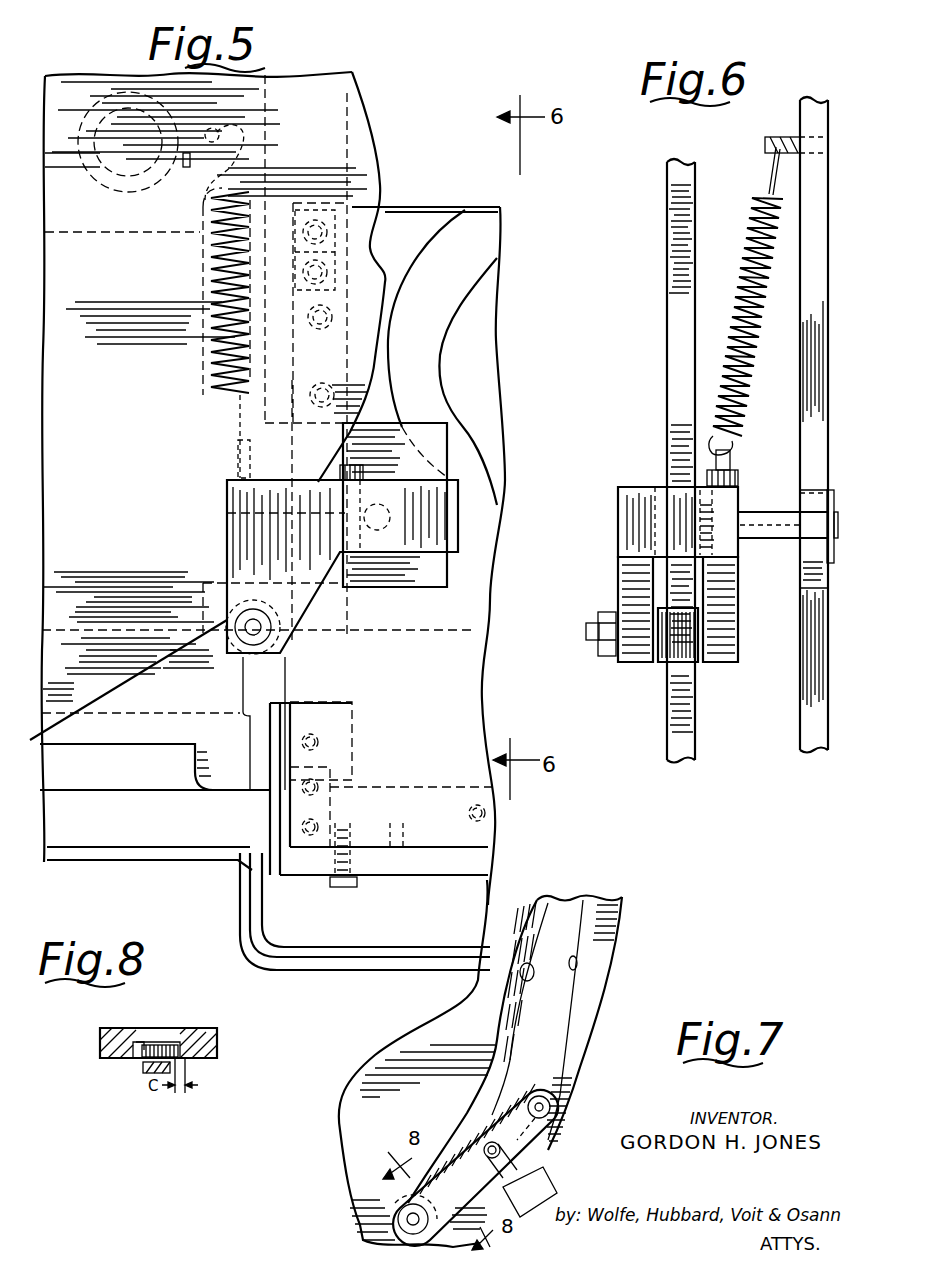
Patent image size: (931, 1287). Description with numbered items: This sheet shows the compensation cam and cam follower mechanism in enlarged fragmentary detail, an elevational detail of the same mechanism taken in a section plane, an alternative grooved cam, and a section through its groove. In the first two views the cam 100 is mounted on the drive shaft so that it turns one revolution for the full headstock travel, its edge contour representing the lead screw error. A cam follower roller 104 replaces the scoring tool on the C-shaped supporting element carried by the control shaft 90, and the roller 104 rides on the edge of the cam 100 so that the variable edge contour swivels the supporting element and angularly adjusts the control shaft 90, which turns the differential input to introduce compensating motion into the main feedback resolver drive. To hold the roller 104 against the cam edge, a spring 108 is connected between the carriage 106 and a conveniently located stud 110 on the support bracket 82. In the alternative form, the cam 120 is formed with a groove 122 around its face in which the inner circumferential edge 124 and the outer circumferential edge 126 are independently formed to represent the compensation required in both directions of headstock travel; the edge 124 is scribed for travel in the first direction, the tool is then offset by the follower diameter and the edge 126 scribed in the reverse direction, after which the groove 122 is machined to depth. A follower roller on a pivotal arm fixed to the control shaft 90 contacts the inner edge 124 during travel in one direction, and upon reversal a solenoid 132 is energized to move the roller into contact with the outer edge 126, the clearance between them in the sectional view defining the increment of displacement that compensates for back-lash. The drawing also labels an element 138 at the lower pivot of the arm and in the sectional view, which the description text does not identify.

In FIG. 5, the support bracket 82 is at (233, 707).
In FIG. 6, the support bracket 82 is at (803, 670).
In FIG. 6, the control shaft 90 is at (770, 540).
In FIG. 7, the control shaft 90 is at (553, 1110).
In FIG. 5, the cam 100 is at (130, 670).
In FIG. 6, the cam 100 is at (683, 730).
In FIG. 5, the cam follower roller 104 is at (235, 645).
In FIG. 6, the cam follower roller 104 is at (675, 643).
In FIG. 5, the carriage 106 is at (343, 568).
In FIG. 6, the carriage 106 is at (642, 495).
In FIG. 5, the spring 108 is at (213, 350).
In FIG. 6, the spring 108 is at (752, 347).
In FIG. 5, the stud 110 is at (255, 114).
In FIG. 6, the stud 110 is at (787, 140).
In FIG. 7, the cam 120 is at (613, 960).
In FIG. 8, the cam 120 is at (217, 1045).
In FIG. 7, the groove 122 is at (533, 1047).
In FIG. 8, the groove 122 is at (182, 1047).
In FIG. 7, the inner circumferential edge 124 is at (510, 976).
In FIG. 8, the inner circumferential edge 124 is at (142, 1040).
In FIG. 7, the outer circumferential edge 126 is at (573, 963).
In FIG. 8, the outer circumferential edge 126 is at (187, 1060).
In FIG. 7, the solenoid 132 is at (537, 1187).
In FIG. 7, the roller 138 is at (400, 1228).
In FIG. 8, the roller 138 is at (143, 1055).